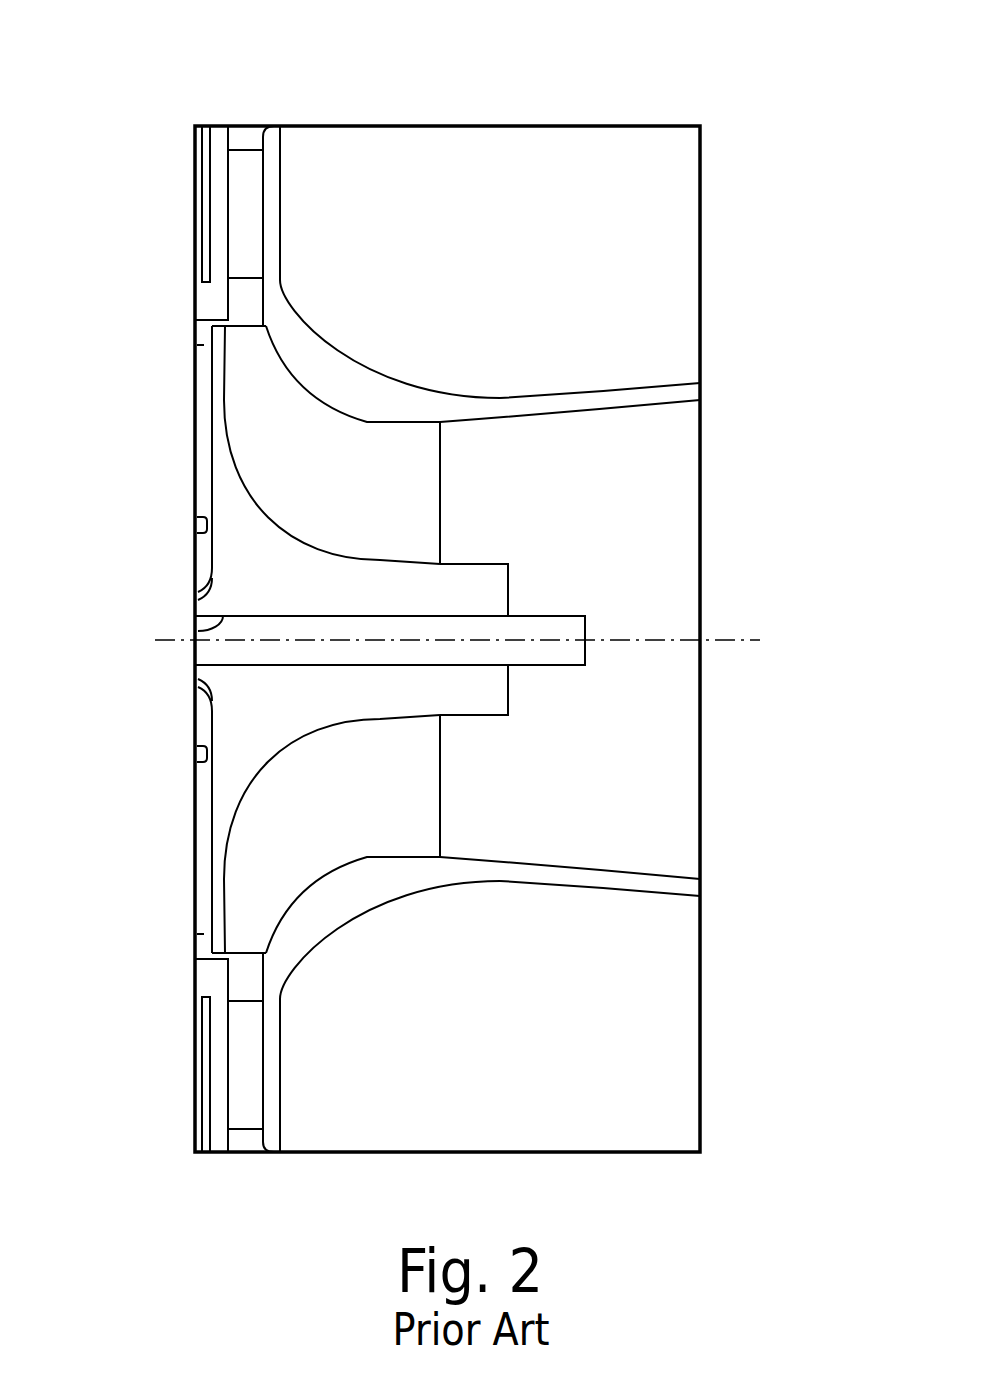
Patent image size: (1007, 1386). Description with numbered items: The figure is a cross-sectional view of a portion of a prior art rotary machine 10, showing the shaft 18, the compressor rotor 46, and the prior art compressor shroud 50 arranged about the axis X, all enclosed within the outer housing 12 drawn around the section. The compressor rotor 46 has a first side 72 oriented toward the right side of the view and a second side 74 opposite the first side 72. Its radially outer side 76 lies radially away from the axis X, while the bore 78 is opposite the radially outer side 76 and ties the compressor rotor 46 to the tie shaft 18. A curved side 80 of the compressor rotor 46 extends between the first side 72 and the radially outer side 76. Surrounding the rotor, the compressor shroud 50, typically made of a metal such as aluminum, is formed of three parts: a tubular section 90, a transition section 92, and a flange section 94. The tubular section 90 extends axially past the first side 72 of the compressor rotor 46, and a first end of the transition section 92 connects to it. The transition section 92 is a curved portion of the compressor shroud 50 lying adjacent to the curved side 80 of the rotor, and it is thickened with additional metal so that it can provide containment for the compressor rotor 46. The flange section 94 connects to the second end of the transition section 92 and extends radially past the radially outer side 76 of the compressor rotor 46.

The rotary machine 10 is at (750, 97).
The housing 12 is at (552, 125).
The shaft 18 is at (563, 623).
The compressor rotor 46 is at (465, 583).
The compressor shroud 50 is at (548, 405).
The first side 72 is at (442, 473).
The second side 74 is at (212, 463).
The radially outer side 76 is at (243, 325).
The bore 78 is at (197, 630).
The curved side 80 is at (287, 370).
The tubular section 90 is at (502, 406).
The transition section 92 is at (323, 385).
The flange section 94 is at (272, 198).
The axis X is at (760, 636).